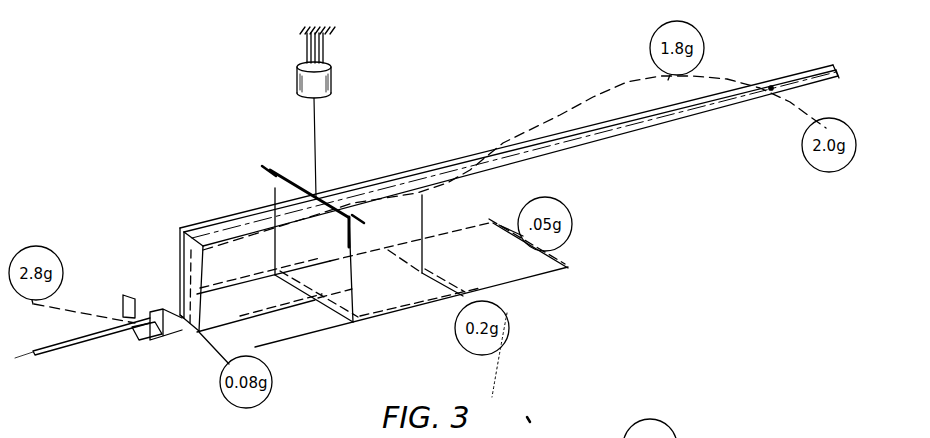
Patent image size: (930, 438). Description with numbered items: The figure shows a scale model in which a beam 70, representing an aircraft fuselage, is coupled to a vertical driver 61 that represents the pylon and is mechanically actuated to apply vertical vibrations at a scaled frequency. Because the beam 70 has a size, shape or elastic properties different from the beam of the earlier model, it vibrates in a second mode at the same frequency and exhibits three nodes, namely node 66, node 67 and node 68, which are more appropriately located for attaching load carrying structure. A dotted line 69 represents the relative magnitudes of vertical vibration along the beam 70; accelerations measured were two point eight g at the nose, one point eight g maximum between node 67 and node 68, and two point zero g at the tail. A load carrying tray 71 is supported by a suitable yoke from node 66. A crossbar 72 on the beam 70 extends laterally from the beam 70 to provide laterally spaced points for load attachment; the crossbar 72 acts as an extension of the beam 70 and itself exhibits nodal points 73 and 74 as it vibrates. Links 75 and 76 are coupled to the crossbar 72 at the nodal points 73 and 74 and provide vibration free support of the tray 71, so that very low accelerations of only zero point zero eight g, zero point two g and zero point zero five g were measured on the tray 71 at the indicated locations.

The vertical driver 61 is at (335, 82).
The node 66 is at (143, 322).
The node 67 is at (433, 180).
The node 68 is at (770, 86).
The dotted line 69 is at (593, 97).
The beam 70 is at (186, 226).
The load carrying tray 71 is at (507, 275).
The crossbar 72 is at (302, 186).
The nodal point 73 is at (280, 174).
The nodal point 74 is at (349, 216).
The link 75 is at (352, 232).
The link 76 is at (275, 188).